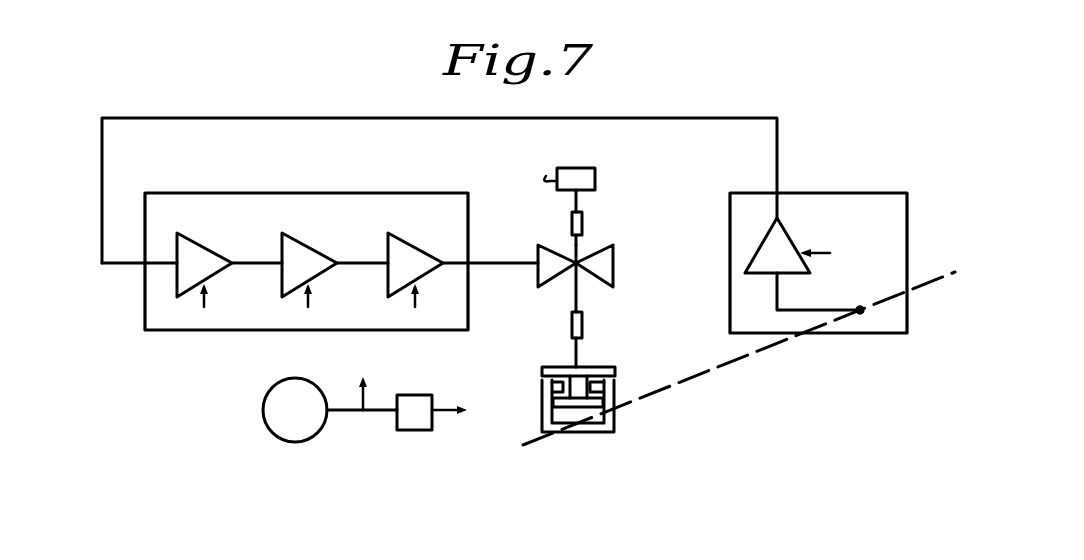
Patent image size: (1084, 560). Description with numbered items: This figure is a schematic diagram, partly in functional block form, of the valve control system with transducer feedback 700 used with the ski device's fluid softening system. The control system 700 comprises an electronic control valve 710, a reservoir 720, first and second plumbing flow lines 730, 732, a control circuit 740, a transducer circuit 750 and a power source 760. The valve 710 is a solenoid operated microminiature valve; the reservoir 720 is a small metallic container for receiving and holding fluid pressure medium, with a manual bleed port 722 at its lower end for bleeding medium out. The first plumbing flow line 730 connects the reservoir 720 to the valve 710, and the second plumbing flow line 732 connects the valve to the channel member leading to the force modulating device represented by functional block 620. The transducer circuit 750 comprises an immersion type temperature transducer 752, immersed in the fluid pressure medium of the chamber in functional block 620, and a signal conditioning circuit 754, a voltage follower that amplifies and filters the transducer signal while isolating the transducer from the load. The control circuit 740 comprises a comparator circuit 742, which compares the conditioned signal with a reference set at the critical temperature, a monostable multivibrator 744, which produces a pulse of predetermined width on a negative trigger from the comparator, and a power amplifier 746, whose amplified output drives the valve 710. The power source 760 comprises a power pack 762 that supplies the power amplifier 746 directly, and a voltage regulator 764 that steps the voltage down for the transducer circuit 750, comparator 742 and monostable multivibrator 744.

The valve control system with transducer feedback 700 is at (835, 111).
The electronic control valve 710 is at (613, 263).
The reservoir 720 is at (597, 174).
The manual bleed port 722 is at (546, 176).
The first plumbing flow line 730 is at (583, 225).
The second plumbing flow line 732 is at (583, 323).
The control circuit 740 is at (305, 193).
The comparator circuit 742 is at (218, 233).
The monostable multivibrator 744 is at (323, 233).
The power amplifier 746 is at (429, 233).
The transducer circuit 750 is at (805, 193).
The immersion type temperature transducer 752 is at (797, 310).
The signal conditioning circuit 754 is at (783, 228).
The power source 760 is at (357, 418).
The power pack 762 is at (270, 390).
The voltage regulator 764 is at (412, 395).
The functional block representing force modulating device 620 is at (628, 423).